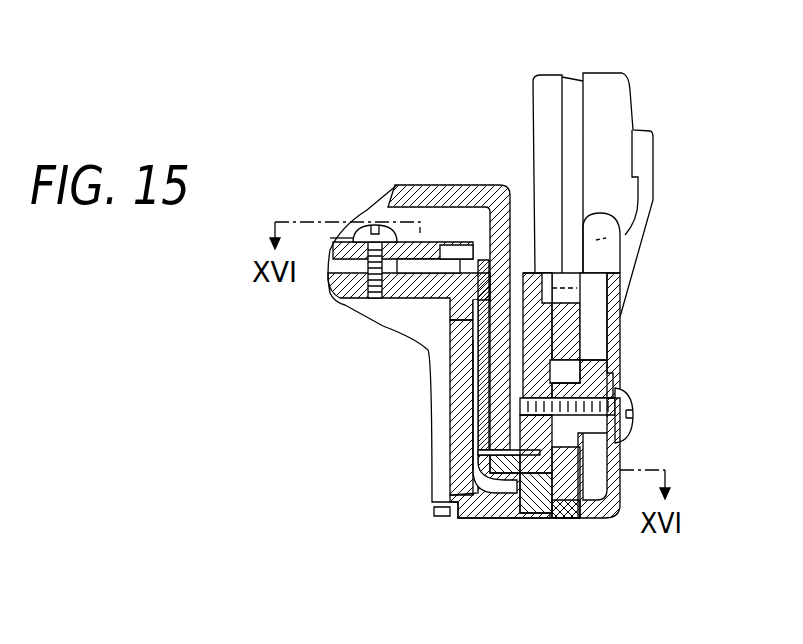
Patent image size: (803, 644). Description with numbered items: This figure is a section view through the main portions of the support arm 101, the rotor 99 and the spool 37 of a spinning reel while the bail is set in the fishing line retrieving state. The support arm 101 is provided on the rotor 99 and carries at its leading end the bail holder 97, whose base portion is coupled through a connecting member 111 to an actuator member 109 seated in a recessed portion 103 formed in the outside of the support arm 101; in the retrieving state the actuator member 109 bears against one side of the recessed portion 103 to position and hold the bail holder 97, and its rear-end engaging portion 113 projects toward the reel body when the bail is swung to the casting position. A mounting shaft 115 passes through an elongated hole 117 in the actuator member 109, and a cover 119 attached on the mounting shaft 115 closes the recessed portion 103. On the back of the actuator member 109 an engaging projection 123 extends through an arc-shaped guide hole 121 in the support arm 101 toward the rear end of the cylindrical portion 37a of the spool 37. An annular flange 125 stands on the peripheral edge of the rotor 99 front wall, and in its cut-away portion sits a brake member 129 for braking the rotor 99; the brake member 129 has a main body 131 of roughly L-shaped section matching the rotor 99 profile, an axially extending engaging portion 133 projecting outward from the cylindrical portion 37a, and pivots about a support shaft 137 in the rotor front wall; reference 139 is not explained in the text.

The spool 37 is at (440, 182).
The cylindrical portion 37a is at (468, 398).
The bail holder 97 is at (618, 80).
The rotor 99 is at (453, 462).
The support arm 101 is at (553, 78).
The recessed portion 103 is at (597, 298).
The actuator member 109 is at (578, 352).
The connecting member 111 is at (587, 273).
The engaging portion 113 is at (565, 516).
The mounting shaft 115 is at (560, 437).
The elongated hole 117 is at (620, 380).
The cover 119 is at (615, 318).
The arc-shaped guide hole 121 is at (533, 500).
The engaging projection 123 is at (480, 475).
The annular flange 125 is at (437, 242).
The brake member 129 is at (462, 410).
The brake member main body 131 is at (462, 250).
The engaging portion 133 is at (500, 487).
The support shaft 137 is at (365, 236).
The strip 139 is at (482, 380).